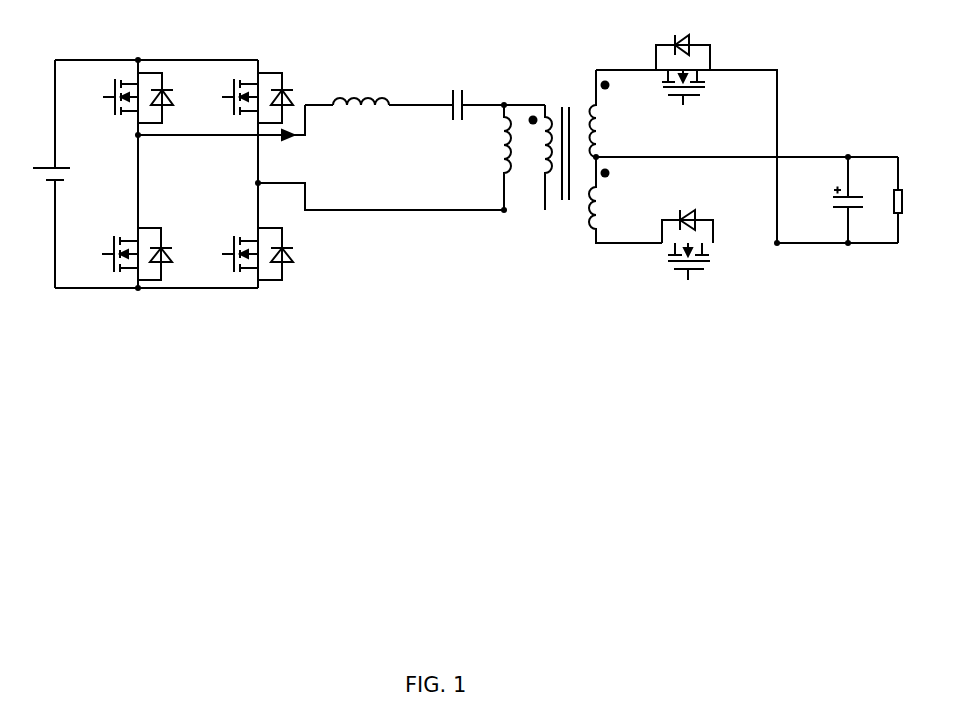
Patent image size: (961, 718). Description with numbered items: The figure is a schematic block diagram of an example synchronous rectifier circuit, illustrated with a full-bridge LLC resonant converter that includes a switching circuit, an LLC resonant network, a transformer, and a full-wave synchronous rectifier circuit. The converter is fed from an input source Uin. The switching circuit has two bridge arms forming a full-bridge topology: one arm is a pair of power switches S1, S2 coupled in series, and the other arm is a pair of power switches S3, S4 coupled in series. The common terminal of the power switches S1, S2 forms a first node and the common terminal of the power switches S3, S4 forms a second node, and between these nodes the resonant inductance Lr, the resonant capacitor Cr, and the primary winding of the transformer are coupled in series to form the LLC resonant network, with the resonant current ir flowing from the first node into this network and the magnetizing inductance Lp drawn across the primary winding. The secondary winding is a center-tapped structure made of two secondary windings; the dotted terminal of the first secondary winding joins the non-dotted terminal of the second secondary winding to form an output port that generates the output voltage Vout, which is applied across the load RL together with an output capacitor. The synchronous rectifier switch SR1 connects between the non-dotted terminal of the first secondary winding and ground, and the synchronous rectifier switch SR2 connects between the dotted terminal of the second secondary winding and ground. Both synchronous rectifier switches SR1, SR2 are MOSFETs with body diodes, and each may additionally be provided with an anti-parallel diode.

The input voltage source Uin is at (39, 180).
The power switch S1 is at (127, 98).
The power switch S2 is at (126, 254).
The power switch S3 is at (247, 98).
The power switch S4 is at (247, 254).
The resonant current ir is at (276, 150).
The resonant inductance Lr is at (379, 86).
The resonant capacitor Cr is at (494, 88).
The parallel (magnetizing) inductor Lp is at (522, 157).
The synchronous rectifier switch SR1 is at (695, 256).
The synchronous rectifier switch SR2 is at (689, 81).
The output voltage Vout is at (849, 187).
The load resistor RL is at (910, 200).